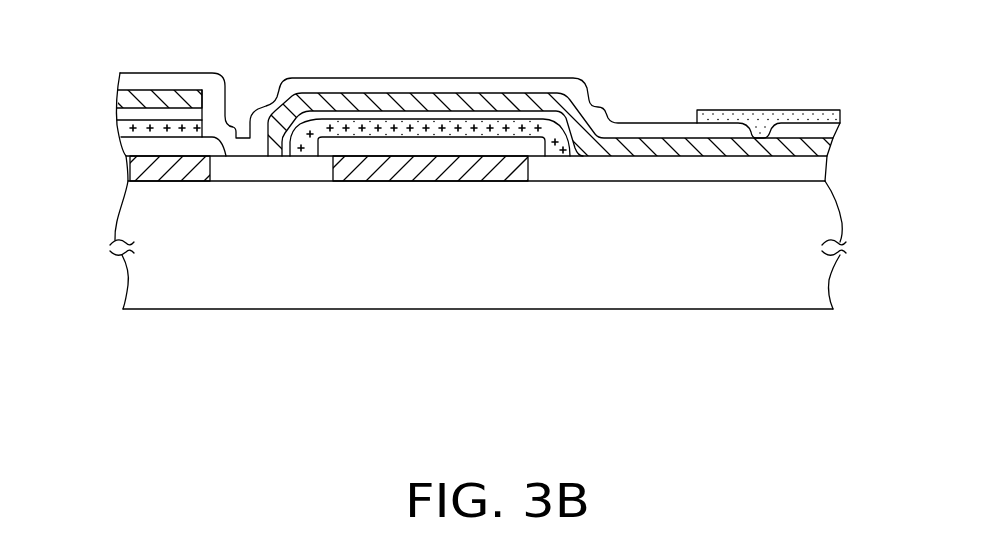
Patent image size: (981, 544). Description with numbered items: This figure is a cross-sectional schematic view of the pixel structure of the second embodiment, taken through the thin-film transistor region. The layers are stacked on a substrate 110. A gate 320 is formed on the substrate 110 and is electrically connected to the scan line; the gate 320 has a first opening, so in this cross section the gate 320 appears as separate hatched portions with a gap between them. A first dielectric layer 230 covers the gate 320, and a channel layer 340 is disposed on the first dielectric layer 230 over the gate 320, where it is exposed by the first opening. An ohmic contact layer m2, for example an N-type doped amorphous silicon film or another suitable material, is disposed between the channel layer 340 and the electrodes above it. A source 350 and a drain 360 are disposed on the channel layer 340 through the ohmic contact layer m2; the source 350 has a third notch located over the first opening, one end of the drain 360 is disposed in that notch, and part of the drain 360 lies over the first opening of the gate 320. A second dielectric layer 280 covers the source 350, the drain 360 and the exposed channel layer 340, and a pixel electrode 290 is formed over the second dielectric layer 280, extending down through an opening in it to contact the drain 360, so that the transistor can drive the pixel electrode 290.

The substrate 110 is at (808, 285).
The first dielectric layer 230 is at (138, 147).
The second dielectric layer 280 is at (128, 80).
The pixel electrode 290 is at (760, 122).
The gate 320 is at (433, 168).
The channel layer 340 is at (510, 122).
The source 350 is at (163, 95).
The drain 360 is at (428, 95).
The ohmic contact layer m2 is at (345, 115).